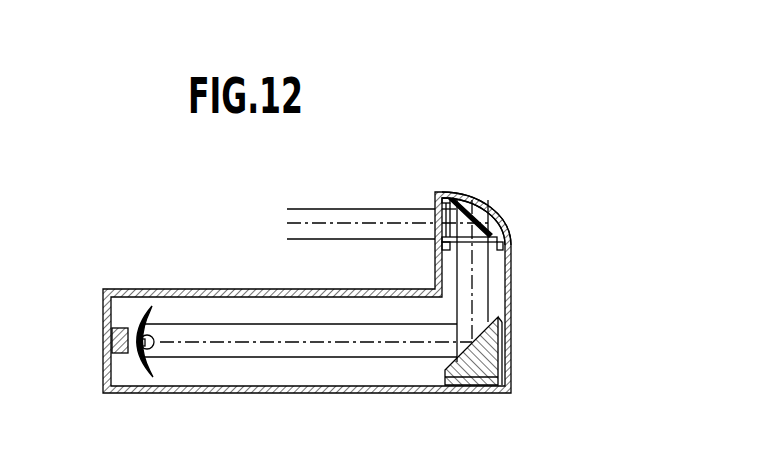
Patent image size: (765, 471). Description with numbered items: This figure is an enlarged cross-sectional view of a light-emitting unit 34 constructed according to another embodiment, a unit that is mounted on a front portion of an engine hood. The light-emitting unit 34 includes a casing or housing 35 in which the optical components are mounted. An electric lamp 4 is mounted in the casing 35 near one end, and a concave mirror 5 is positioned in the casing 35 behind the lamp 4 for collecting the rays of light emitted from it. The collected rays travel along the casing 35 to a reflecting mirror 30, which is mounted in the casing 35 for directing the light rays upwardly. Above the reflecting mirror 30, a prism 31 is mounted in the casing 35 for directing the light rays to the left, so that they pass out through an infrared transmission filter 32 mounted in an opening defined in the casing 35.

The electric lamp 4 is at (152, 348).
The concave mirror 5 is at (132, 320).
The reflecting mirror 30 is at (500, 382).
The prism 31 is at (498, 229).
The infrared transmission filter 32 is at (438, 230).
The light-emitting unit 34 is at (500, 200).
The casing 35 is at (512, 292).